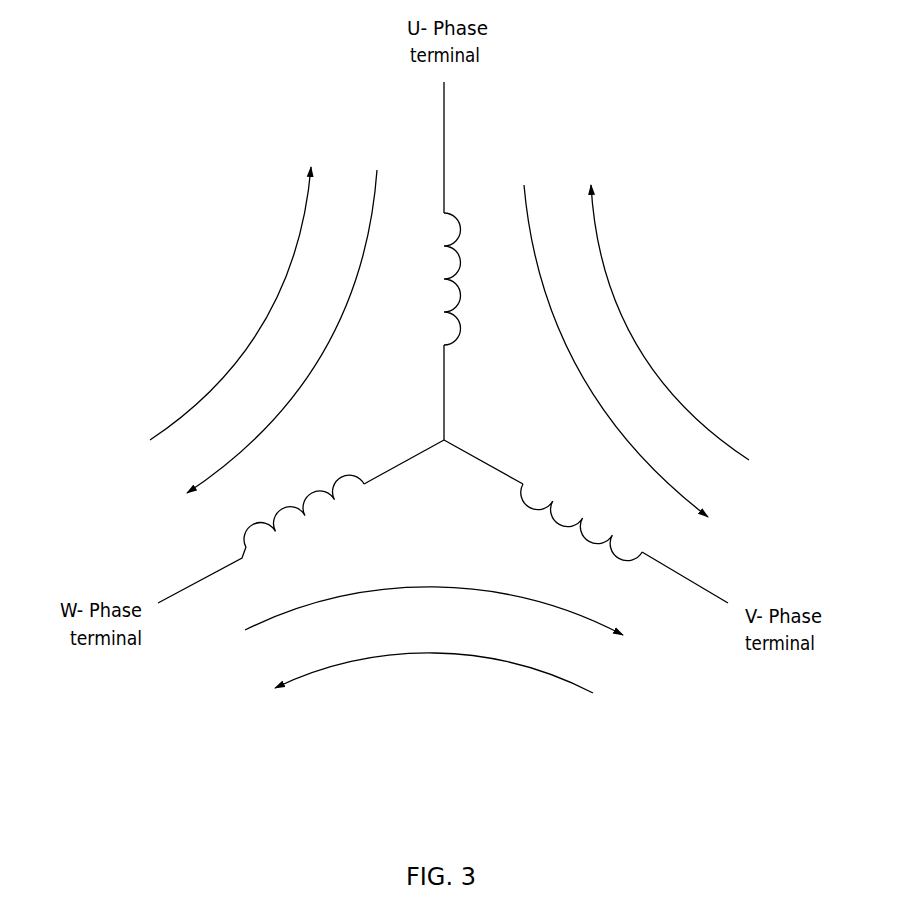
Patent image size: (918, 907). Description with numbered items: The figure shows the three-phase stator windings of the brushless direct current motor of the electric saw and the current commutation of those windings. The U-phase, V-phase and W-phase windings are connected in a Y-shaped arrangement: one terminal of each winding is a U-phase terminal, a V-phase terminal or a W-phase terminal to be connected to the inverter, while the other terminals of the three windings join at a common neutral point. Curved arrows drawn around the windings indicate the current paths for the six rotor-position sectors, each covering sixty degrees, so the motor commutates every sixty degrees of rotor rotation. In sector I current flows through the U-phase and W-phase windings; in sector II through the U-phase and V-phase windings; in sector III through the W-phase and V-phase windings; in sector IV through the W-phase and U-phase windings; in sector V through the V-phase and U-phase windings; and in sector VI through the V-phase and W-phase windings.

The sector I is at (284, 319).
The sector II is at (612, 336).
The sector III is at (419, 623).
The sector IV is at (213, 318).
The sector V is at (681, 336).
The sector VI is at (451, 684).